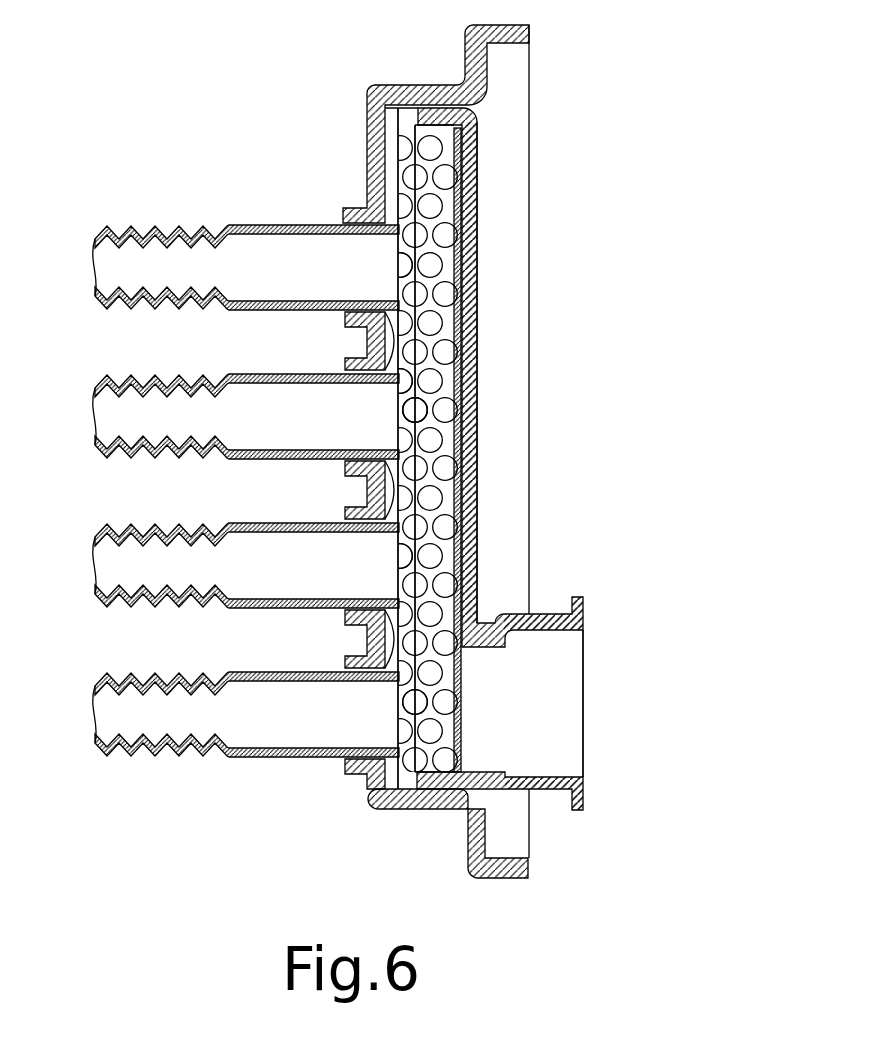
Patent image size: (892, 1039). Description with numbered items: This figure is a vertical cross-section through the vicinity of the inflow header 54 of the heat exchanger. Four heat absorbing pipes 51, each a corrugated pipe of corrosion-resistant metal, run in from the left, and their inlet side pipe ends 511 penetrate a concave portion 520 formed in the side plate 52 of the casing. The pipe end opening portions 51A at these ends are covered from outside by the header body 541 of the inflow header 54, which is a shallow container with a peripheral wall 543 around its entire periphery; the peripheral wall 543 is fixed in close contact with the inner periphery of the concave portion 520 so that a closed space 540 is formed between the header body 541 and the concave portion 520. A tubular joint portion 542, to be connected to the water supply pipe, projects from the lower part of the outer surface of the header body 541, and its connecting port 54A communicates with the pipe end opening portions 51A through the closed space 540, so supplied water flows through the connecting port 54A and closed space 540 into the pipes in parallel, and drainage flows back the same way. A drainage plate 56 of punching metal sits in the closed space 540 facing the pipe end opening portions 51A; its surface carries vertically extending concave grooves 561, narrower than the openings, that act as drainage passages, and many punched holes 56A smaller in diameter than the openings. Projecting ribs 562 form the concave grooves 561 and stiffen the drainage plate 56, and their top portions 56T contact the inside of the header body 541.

The heat absorbing pipe 51 is at (160, 226).
The inlet side pipe end 511 is at (362, 212).
The pipe end opening portion 51A is at (410, 266).
The side plate 52 is at (487, 73).
The concave portion 520 is at (487, 793).
The inflow header 54 is at (485, 330).
The closed space 540 is at (400, 113).
The header body 541 is at (477, 136).
The joint portion 542 is at (583, 750).
The peripheral wall 543 is at (437, 98).
The connecting port 54A is at (478, 735).
The drainage plate 56 is at (383, 170).
The concave groove 561 is at (392, 287).
The projecting rib 562 is at (448, 200).
The punched hole 56A is at (400, 392).
The top portion 56T is at (461, 187).